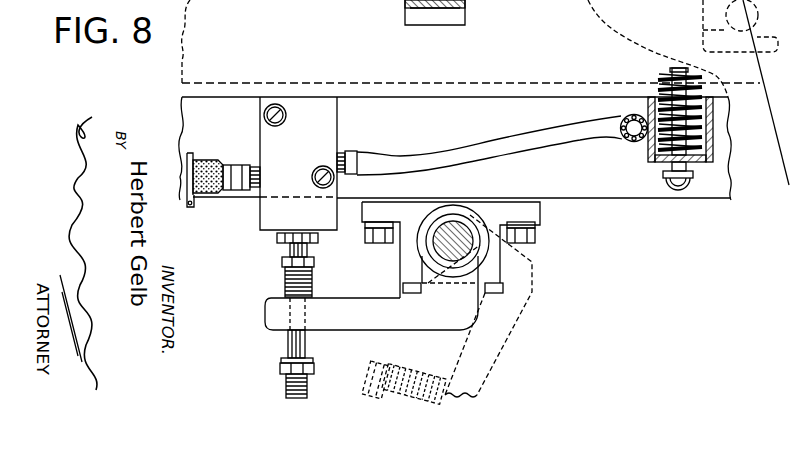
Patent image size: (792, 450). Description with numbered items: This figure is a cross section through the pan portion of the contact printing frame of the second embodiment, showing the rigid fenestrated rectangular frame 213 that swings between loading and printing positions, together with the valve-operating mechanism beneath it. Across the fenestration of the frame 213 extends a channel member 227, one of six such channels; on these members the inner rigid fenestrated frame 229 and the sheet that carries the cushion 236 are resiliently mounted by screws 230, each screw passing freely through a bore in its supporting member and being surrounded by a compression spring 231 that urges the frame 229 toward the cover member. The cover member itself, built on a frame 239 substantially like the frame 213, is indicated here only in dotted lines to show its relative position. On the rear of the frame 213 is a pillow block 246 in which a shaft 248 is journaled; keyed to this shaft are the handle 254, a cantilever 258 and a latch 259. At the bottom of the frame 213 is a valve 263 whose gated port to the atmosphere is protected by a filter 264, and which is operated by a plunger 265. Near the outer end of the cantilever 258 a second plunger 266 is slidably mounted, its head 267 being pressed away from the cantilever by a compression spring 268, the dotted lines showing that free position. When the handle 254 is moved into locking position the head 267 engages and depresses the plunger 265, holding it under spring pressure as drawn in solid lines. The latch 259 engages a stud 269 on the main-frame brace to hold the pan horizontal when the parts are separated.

The rigid fenestrated rectangular frame 213 is at (203, 116).
The channel member 227 is at (649, 159).
The rigid fenestrated rectangular frame 229 is at (461, 15).
The screw 230 is at (681, 190).
The compression spring 231 is at (668, 84).
The cushion 236 is at (405, 10).
The rigid fenestrated rectangular frame 239 is at (525, 85).
The pillow block 246 is at (407, 262).
The shaft 248 is at (455, 247).
The handle 254 is at (791, 229).
The cantilever 258 is at (396, 319).
The latch 259 is at (704, 12).
The valve 263 is at (320, 138).
The filter 264 is at (203, 199).
The plunger 265 is at (290, 250).
The plunger 266 is at (296, 343).
The head 267 is at (283, 262).
The compression spring 268 is at (287, 278).
The stud 269 is at (705, 31).